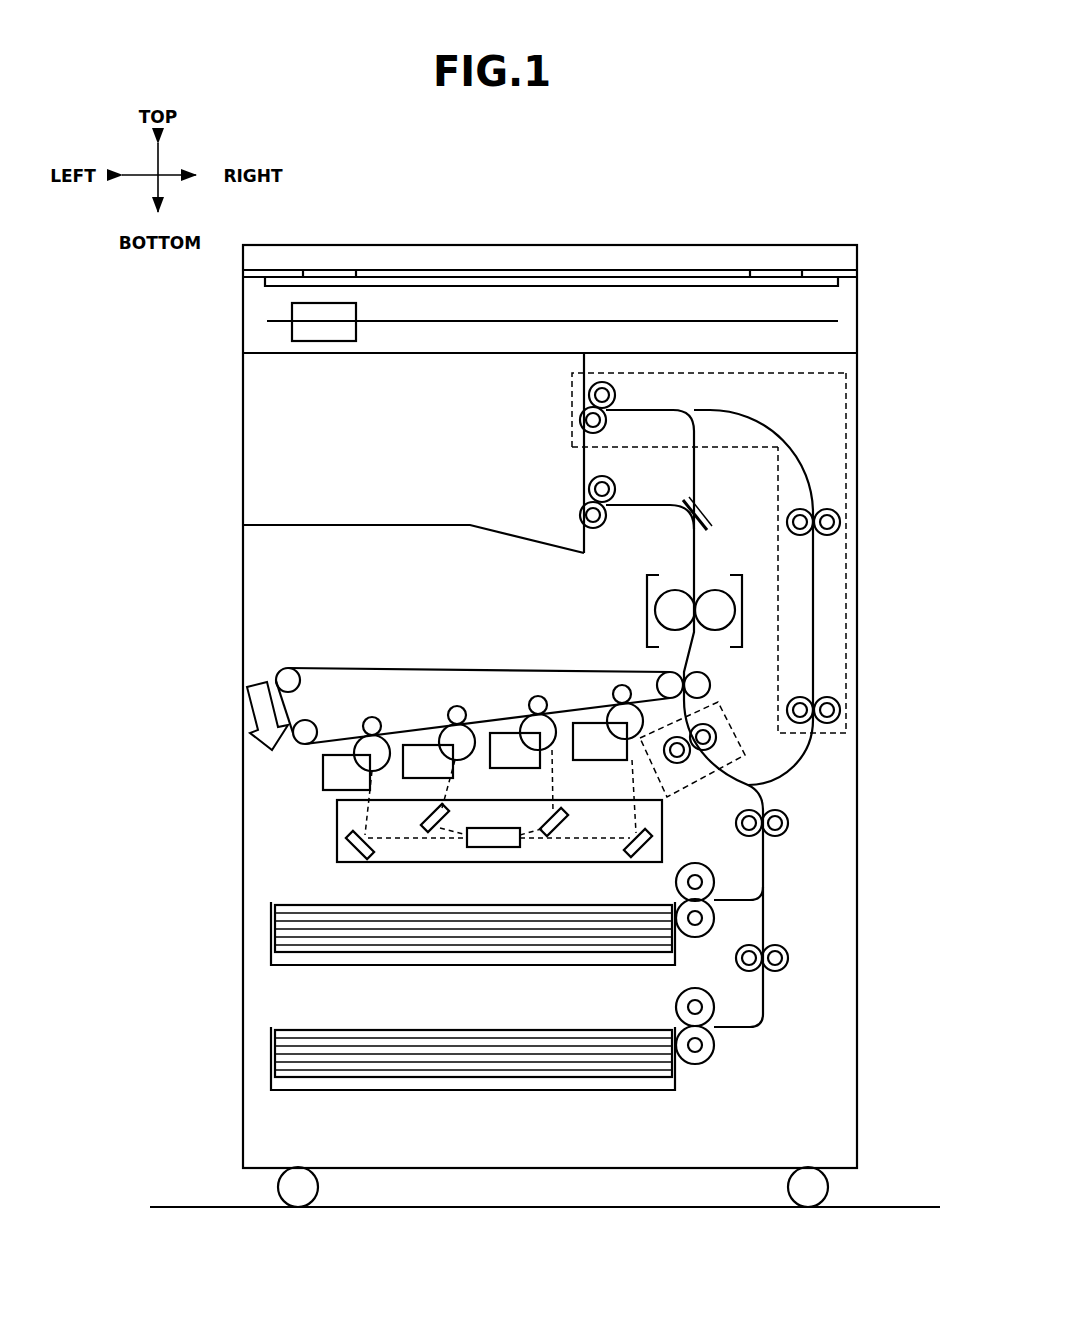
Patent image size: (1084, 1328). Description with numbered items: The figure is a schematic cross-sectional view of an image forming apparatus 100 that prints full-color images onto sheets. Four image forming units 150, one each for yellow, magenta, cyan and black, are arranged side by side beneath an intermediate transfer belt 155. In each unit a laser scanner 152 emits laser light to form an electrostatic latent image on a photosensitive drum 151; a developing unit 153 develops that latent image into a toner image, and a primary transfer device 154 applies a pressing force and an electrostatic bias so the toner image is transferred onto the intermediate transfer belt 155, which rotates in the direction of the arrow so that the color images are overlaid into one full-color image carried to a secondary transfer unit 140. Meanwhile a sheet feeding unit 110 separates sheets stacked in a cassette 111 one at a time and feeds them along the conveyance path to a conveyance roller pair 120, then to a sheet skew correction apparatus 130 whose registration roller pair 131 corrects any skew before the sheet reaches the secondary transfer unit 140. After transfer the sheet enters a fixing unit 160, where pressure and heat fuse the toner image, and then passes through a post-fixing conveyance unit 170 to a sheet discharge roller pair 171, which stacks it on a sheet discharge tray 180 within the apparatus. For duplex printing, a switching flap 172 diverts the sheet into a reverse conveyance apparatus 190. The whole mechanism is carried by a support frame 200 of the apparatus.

The image forming apparatus 100 is at (828, 215).
The sheet feeding unit 110 is at (718, 873).
The cassette 111 is at (485, 967).
The conveyance roller pair 120 is at (795, 822).
The sheet skew correction apparatus 130 is at (742, 762).
The registration roller pair 131 is at (723, 735).
The secondary transfer unit 140 is at (720, 679).
The image forming unit 150 is at (317, 798).
The photosensitive drum 151 is at (354, 750).
The laser scanner 152 is at (357, 862).
The developing unit 153 is at (323, 770).
The primary transfer device 154 is at (375, 717).
The intermediate transfer belt 155 is at (372, 668).
The fixing unit 160 is at (647, 597).
The post-fixing conveyance unit 170 is at (735, 488).
The sheet discharge roller pair 171 is at (612, 470).
The switching flap 172 is at (705, 516).
The sheet discharge tray 180 is at (316, 525).
The reverse conveyance apparatus 190 is at (853, 446).
The support frame 200 is at (857, 1099).